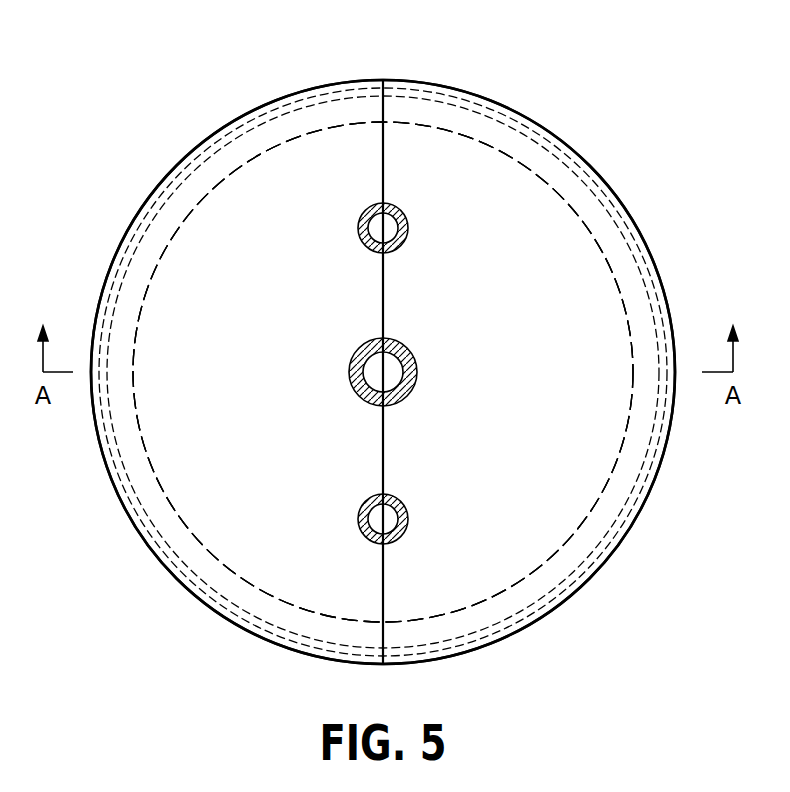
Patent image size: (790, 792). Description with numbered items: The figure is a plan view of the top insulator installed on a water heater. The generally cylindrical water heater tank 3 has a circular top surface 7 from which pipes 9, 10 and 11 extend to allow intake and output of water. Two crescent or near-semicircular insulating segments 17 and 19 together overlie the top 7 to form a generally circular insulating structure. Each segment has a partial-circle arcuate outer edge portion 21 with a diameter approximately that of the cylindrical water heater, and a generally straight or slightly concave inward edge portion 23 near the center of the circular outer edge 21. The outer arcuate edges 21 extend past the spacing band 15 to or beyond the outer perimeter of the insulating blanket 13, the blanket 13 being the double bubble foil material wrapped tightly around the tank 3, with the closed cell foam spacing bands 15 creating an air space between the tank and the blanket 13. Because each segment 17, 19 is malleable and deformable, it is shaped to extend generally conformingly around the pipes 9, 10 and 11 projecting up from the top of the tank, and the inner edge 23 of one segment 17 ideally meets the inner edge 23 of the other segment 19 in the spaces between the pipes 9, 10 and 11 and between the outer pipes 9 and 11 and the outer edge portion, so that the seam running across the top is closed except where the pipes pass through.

The water heater tank 3 is at (518, 190).
The circular top surface 7 is at (290, 177).
The pipe 9 is at (409, 520).
The pipe 10 is at (418, 373).
The pipe 11 is at (409, 225).
The insulating blanket 13 is at (672, 427).
The spacing bands 15 is at (667, 279).
The insulating segment 17 is at (205, 292).
The insulating segment 19 is at (590, 267).
The arcuate outer edge portion 21 is at (185, 178).
The inward edge portion 23 is at (376, 158).